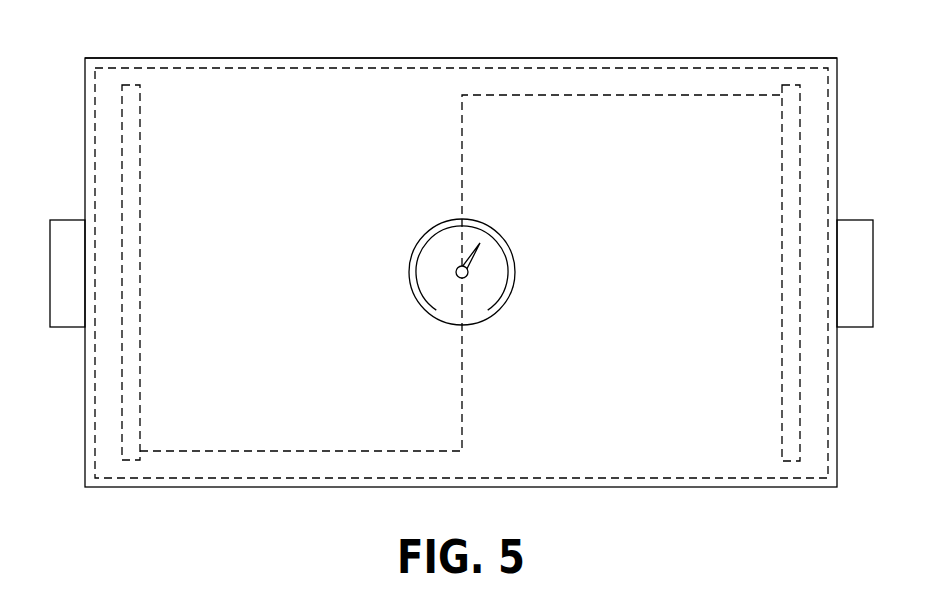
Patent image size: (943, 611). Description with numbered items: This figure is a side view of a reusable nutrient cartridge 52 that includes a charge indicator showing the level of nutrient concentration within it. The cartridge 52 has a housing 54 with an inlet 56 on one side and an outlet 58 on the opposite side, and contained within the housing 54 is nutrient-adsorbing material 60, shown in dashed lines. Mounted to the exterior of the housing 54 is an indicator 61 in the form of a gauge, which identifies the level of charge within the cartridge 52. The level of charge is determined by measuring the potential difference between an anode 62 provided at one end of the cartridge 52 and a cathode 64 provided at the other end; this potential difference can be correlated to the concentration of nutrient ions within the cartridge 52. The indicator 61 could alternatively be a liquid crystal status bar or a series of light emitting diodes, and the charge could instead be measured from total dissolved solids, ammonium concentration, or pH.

The cartridge 52 is at (858, 72).
The housing 54 is at (623, 58).
The inlet 56 is at (50, 212).
The outlet 58 is at (872, 212).
The nutrient-adsorbing material 60 is at (668, 455).
The indicator 61 is at (512, 236).
The anode 62 is at (140, 254).
The cathode 64 is at (782, 254).